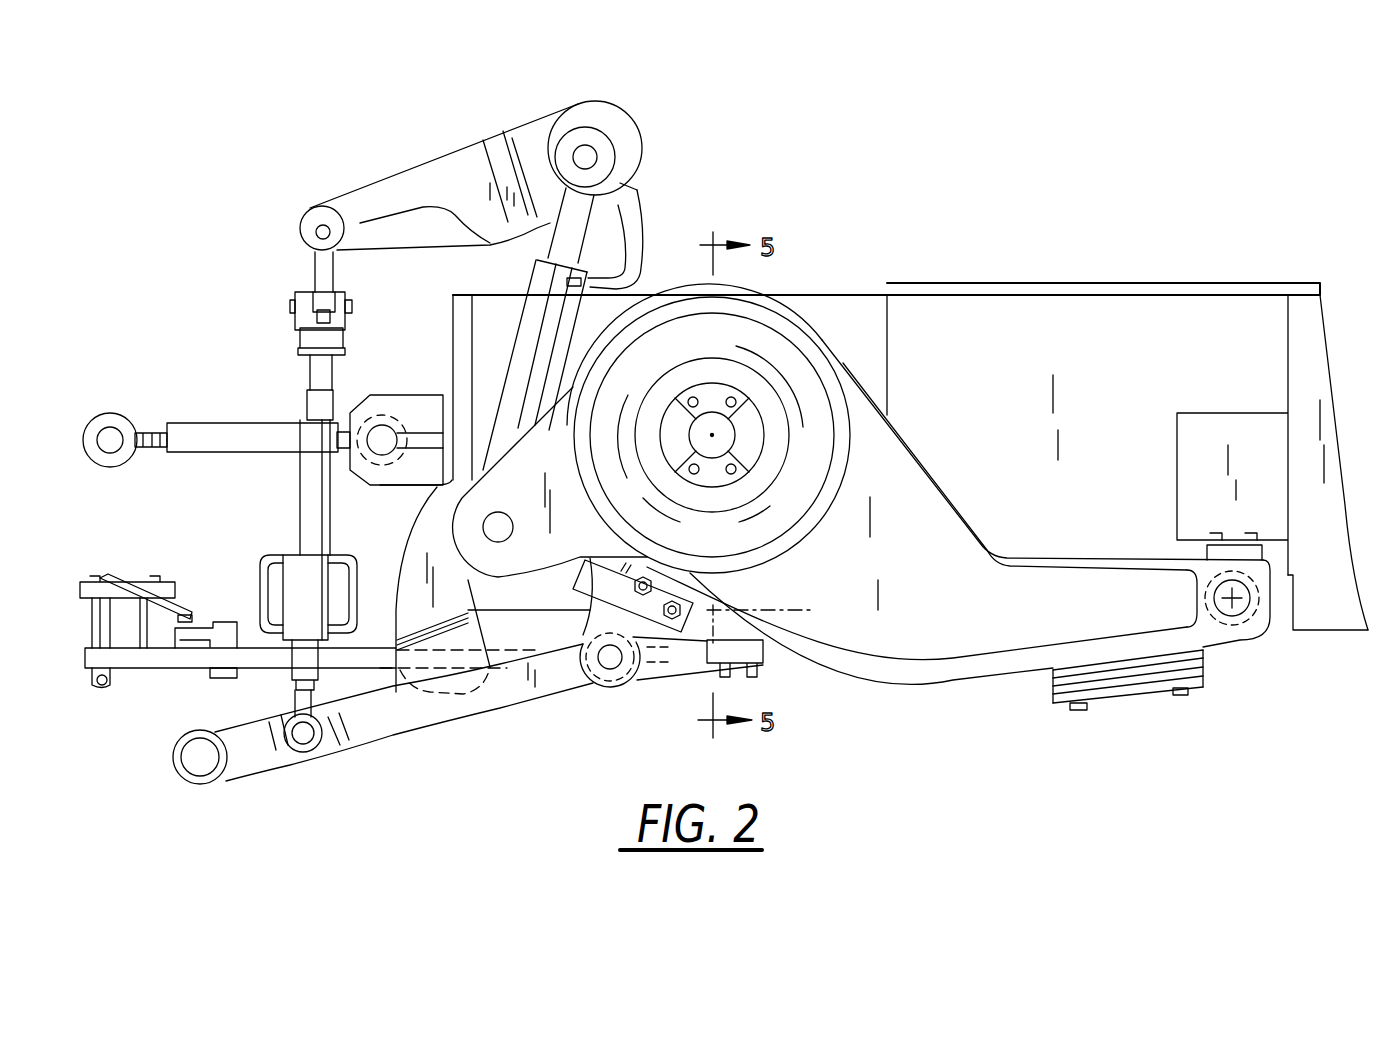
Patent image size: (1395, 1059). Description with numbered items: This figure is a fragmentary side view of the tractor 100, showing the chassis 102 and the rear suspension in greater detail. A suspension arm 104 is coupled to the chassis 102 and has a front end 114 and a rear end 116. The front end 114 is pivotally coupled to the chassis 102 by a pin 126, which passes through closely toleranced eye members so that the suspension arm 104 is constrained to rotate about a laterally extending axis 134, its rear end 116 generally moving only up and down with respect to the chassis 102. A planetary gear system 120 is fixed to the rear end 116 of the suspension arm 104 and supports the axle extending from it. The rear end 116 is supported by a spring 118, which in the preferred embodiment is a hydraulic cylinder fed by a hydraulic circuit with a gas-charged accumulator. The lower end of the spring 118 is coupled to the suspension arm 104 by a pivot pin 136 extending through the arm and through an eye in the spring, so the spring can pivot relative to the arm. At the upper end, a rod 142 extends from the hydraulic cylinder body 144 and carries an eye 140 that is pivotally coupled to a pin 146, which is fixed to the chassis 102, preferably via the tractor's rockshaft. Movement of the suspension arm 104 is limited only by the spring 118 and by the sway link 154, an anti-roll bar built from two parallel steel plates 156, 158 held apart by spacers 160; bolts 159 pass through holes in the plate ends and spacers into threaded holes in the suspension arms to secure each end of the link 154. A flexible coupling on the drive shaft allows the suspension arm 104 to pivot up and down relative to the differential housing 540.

The tractor 100 is at (938, 198).
The chassis 102 is at (867, 293).
The suspension arm 104 is at (887, 665).
The front end 114 is at (1213, 633).
The rear end 116 is at (458, 512).
The spring 118 is at (522, 340).
The planetary gear system 120 is at (778, 540).
The pin 126 is at (1244, 610).
The laterally extending axis 134 is at (1217, 592).
The pivot pin 136 is at (502, 535).
The eye 140 is at (612, 135).
The rod 142 is at (641, 196).
The hydraulic cylinder body 144 is at (525, 315).
The pin 146 is at (582, 150).
The sway link 154 is at (1133, 693).
The plate 156 is at (1108, 687).
The plate 158 is at (1068, 668).
The bolts 159 is at (1077, 710).
The spacers 160 is at (1083, 675).
The differential housing 540 is at (802, 308).